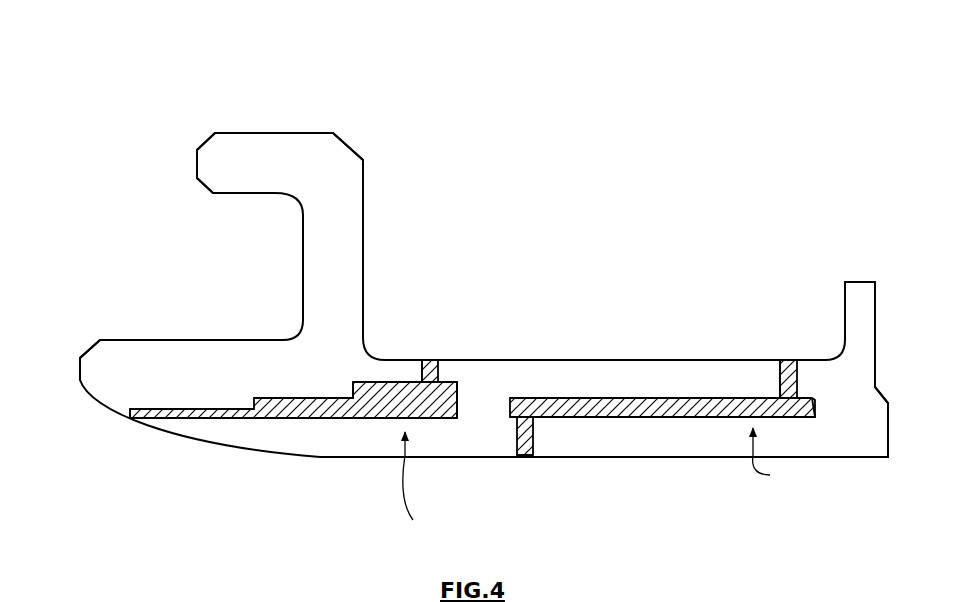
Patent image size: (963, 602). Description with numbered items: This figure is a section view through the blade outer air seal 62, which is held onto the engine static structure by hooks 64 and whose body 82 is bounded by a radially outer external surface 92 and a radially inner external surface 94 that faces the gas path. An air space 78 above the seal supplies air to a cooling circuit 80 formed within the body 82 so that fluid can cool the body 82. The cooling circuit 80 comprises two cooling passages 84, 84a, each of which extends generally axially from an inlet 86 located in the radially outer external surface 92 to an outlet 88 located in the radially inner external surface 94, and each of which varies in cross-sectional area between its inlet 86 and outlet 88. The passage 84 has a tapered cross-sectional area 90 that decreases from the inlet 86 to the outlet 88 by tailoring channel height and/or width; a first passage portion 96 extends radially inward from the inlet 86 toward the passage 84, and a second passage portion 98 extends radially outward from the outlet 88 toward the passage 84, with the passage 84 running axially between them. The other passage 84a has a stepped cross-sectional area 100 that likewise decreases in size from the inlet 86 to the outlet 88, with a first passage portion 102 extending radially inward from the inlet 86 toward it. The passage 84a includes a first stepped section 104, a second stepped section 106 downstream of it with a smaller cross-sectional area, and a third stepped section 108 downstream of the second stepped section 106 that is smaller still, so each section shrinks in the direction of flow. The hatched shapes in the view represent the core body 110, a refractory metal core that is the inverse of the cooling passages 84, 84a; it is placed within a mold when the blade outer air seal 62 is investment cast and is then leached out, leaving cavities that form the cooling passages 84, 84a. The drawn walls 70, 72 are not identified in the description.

The blade outer air seal 62 is at (122, 132).
The hooks 64 is at (232, 150).
The first wall 70 is at (80, 360).
The second wall 72 is at (890, 428).
The air space 78 is at (405, 165).
The cooling circuit 80 is at (600, 483).
The body 82 is at (189, 368).
The cooling passage 84 is at (655, 398).
The cooling passage 84a is at (353, 390).
The inlet 86 is at (440, 358).
The outlet 88 is at (135, 412).
The tapered cross-sectional area 90 is at (818, 394).
The radially outer external surface 92 is at (530, 360).
The radially inner external surface 94 is at (645, 457).
The first passage portion 96 is at (778, 375).
The second passage portion 98 is at (535, 440).
The stepped cross-sectional area 100 is at (460, 394).
The first passage portion 102 is at (420, 372).
The first stepped section 104 is at (425, 420).
The second stepped section 106 is at (322, 420).
The third stepped section 108 is at (210, 418).
The core body 110 is at (672, 432).